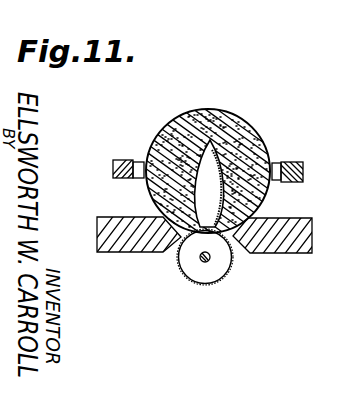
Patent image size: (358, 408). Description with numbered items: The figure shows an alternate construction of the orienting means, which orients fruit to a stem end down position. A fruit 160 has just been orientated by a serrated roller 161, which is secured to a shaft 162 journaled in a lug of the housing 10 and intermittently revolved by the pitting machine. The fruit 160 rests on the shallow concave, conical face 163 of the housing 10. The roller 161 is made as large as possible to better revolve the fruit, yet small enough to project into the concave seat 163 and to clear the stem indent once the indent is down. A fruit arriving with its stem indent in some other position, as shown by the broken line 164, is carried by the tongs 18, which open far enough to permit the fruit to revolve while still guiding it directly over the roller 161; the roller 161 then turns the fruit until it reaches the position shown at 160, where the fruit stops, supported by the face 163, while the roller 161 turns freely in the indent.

The housing 10 is at (123, 218).
The tongs 18 is at (301, 163).
The fruit 160 is at (257, 145).
The serrated roller 161 is at (186, 274).
The shaft 162 is at (210, 259).
The concave conical face 163 is at (258, 219).
The broken line 164 is at (200, 108).